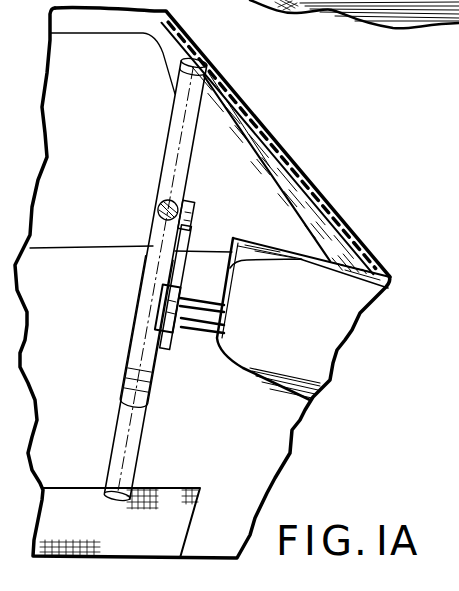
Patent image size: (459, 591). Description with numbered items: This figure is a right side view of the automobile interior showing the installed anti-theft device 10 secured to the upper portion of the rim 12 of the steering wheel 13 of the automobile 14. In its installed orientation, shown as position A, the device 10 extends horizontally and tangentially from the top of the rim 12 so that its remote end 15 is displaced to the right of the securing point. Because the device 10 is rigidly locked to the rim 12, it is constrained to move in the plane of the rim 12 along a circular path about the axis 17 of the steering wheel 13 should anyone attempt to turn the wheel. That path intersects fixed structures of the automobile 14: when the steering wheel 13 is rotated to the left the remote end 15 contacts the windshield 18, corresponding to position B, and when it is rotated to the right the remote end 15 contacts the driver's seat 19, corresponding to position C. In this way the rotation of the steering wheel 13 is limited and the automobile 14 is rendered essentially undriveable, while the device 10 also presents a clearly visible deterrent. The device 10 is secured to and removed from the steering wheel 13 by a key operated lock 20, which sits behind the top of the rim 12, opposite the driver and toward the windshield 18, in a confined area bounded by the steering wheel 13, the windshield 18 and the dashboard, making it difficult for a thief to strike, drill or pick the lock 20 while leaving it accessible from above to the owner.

The anti-theft device 10 is at (135, 213).
The rim 12 is at (153, 243).
The steering wheel 13 is at (127, 350).
The automobile 14 is at (219, 443).
The remote end 15 is at (159, 198).
The axis 17 is at (143, 303).
The windshield 18 is at (262, 127).
The driver's seat 19 is at (60, 488).
The key operated lock 20 is at (193, 211).
The position A is at (173, 178).
The position B is at (182, 95).
The position C is at (116, 440).